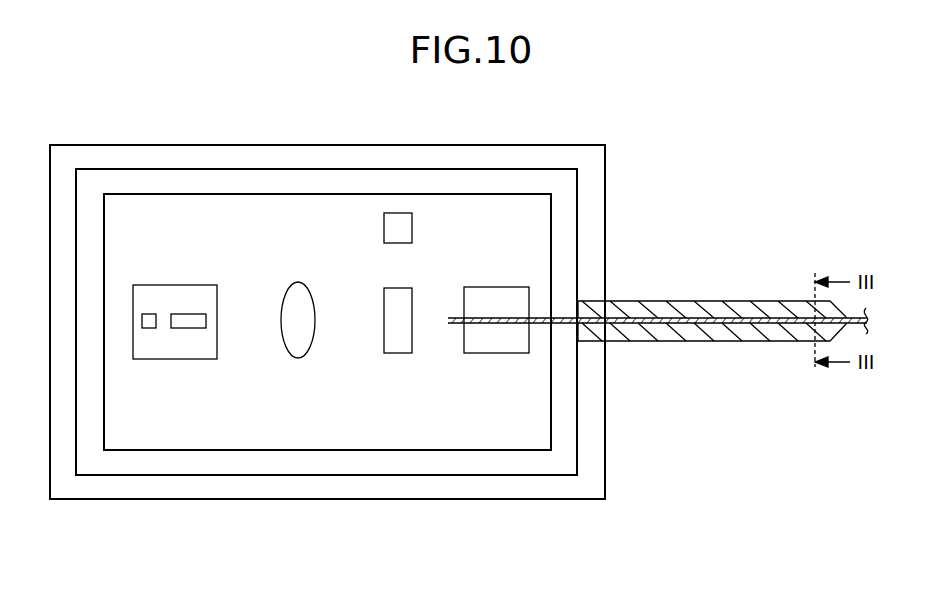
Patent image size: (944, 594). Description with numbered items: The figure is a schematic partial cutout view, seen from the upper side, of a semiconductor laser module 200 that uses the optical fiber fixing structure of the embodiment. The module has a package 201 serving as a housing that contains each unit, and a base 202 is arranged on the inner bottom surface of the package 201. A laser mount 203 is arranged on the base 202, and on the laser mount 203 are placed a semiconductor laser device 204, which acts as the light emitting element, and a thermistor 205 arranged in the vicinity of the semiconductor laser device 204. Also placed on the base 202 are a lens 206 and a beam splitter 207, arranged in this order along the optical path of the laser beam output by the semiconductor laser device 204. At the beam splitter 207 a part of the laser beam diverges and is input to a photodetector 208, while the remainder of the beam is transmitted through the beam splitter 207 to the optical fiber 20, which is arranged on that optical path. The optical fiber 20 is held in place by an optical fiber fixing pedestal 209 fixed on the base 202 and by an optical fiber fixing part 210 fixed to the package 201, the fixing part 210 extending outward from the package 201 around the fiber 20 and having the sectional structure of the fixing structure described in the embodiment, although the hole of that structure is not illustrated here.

The semiconductor laser module 200 is at (733, 150).
The package 201 is at (71, 144).
The base 202 is at (229, 214).
The laser mount 203 is at (151, 285).
The semiconductor laser device 204 is at (190, 328).
The thermistor 205 is at (148, 328).
The lens 206 is at (298, 282).
The beam splitter 207 is at (398, 353).
The photodetector 208 is at (399, 213).
The optical fiber fixing pedestal 209 is at (497, 287).
The optical fiber fixing part 210 is at (782, 300).
The optical fiber 20 is at (746, 326).